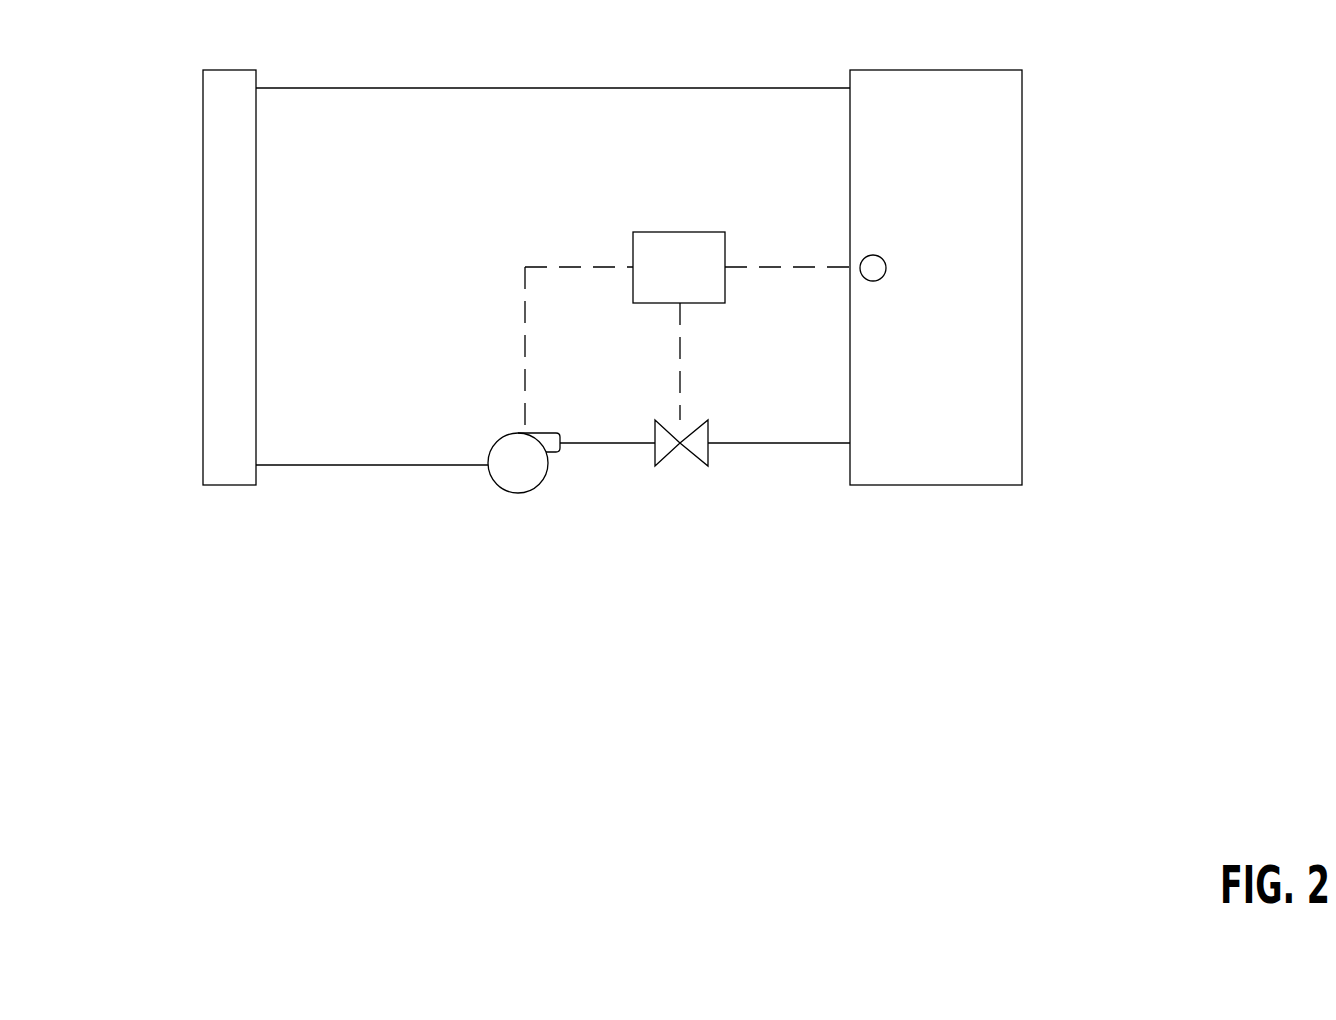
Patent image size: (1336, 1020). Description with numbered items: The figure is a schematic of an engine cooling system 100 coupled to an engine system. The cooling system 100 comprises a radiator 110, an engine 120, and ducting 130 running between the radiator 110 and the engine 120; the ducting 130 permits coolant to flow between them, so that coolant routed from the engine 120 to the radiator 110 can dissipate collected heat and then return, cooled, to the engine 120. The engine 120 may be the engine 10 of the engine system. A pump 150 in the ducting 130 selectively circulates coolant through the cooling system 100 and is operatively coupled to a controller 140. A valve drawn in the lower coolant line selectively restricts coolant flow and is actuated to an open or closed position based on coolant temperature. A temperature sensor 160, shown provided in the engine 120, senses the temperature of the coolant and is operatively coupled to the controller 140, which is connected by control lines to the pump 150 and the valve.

The fluid circulation system 100 is at (598, 288).
The radiator 110 is at (225, 350).
The engine 120 is at (975, 342).
The ducting 130 is at (325, 465).
The controller 140 is at (660, 247).
The pump 150 is at (518, 489).
The temperature sensor 160 is at (882, 258).
The engine 10 is at (673, 458).